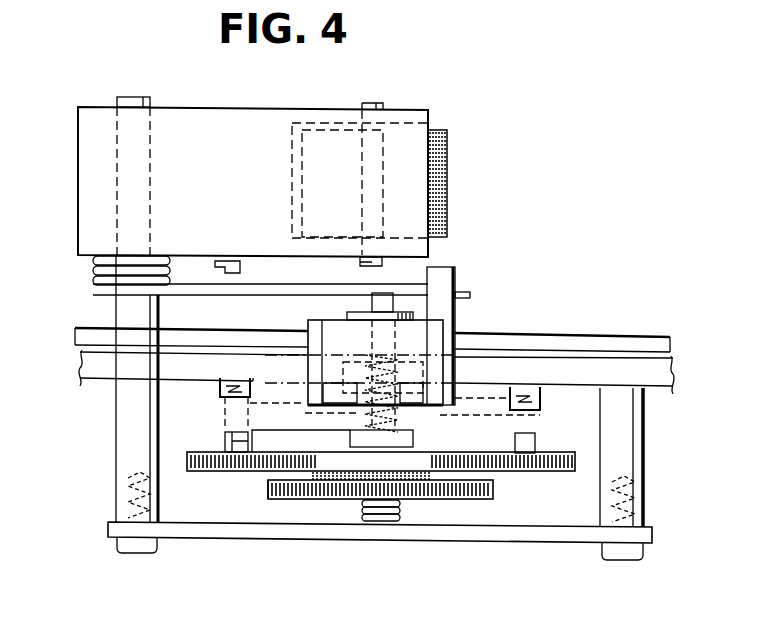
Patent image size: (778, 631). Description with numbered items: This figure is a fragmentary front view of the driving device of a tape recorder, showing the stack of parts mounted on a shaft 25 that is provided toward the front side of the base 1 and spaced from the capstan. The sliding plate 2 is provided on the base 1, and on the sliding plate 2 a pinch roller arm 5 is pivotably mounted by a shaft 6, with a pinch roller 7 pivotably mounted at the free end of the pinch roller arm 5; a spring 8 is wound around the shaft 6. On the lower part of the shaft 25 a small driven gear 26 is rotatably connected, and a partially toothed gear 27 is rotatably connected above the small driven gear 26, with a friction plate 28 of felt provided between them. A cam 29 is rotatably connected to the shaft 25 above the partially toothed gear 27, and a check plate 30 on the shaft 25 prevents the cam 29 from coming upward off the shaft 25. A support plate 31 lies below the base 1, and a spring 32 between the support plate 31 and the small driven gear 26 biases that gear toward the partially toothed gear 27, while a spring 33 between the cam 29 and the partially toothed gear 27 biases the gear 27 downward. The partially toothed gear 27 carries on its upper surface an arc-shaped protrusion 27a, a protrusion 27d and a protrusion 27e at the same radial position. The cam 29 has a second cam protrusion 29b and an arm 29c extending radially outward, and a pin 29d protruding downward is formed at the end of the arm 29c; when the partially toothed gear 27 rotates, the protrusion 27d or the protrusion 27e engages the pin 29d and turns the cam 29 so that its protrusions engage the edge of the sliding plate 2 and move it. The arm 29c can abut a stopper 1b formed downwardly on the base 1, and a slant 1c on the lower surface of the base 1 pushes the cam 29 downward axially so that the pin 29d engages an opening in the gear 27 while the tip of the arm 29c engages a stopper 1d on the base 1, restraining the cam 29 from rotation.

The base 1 is at (647, 372).
The stopper 1b is at (220, 397).
The slant 1c is at (600, 385).
The stopper 1d is at (535, 400).
The sliding plate 2 is at (568, 342).
The pinch roller arm 5 is at (208, 123).
The shaft 6 is at (128, 97).
The pinch roller 7 is at (448, 157).
The spring 8 is at (265, 290).
The shaft 25 is at (388, 296).
The small driven gear 26 is at (335, 499).
The partially toothed gear 27 is at (502, 471).
The protrusion 27a is at (282, 492).
The protrusion 27d is at (530, 445).
The protrusion 27e is at (225, 437).
The friction plate 28 is at (418, 500).
The cam 29 is at (427, 337).
The second cam protrusion 29b is at (457, 267).
The arm 29c is at (415, 383).
The pin 29d is at (345, 437).
The check plate 30 is at (347, 315).
The support plate 31 is at (183, 530).
The spring 32 is at (380, 522).
The spring 33 is at (400, 423).